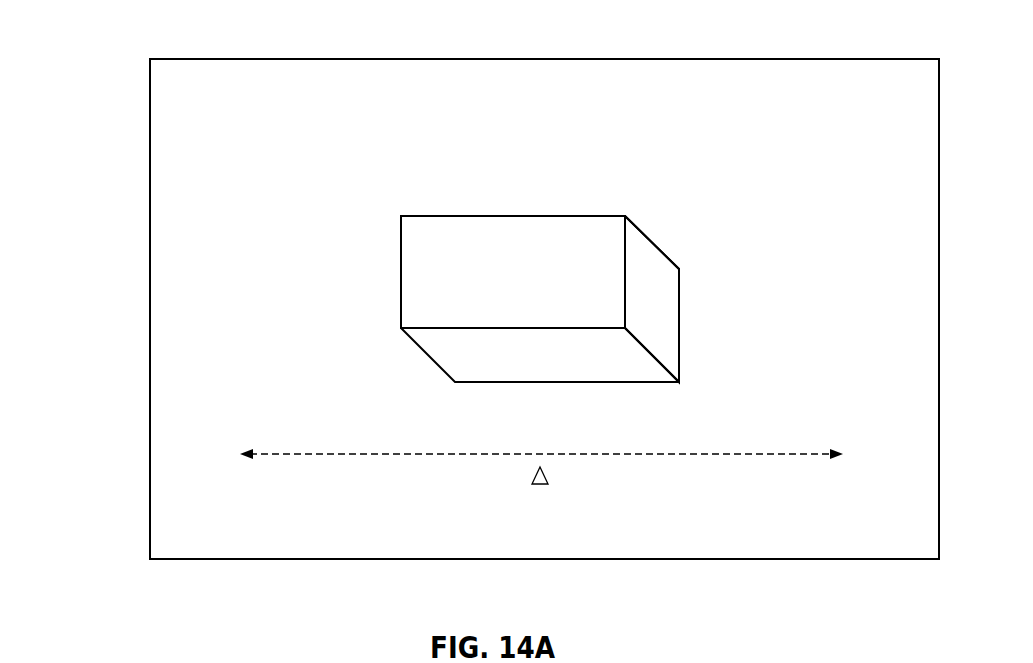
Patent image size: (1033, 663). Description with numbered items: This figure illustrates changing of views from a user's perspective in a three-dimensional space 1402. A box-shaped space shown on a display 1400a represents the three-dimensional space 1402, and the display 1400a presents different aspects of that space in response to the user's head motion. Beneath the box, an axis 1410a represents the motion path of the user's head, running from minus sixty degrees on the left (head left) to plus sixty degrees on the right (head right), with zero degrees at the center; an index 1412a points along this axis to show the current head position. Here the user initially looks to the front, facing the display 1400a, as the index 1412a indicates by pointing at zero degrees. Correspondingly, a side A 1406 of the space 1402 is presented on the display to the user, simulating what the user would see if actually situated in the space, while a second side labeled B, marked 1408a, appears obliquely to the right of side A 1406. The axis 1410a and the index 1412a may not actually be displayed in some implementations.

The display 1400a is at (160, 44).
The three-dimensional space 1402 is at (402, 174).
The side A 1406 is at (410, 268).
The side face B of object 1408a is at (672, 321).
The axis 1410a is at (668, 486).
The index 1412a is at (530, 482).